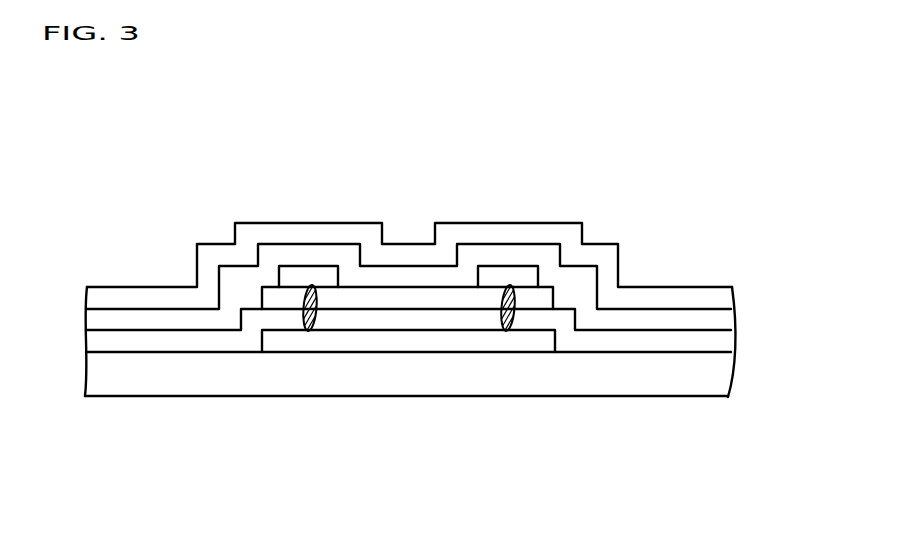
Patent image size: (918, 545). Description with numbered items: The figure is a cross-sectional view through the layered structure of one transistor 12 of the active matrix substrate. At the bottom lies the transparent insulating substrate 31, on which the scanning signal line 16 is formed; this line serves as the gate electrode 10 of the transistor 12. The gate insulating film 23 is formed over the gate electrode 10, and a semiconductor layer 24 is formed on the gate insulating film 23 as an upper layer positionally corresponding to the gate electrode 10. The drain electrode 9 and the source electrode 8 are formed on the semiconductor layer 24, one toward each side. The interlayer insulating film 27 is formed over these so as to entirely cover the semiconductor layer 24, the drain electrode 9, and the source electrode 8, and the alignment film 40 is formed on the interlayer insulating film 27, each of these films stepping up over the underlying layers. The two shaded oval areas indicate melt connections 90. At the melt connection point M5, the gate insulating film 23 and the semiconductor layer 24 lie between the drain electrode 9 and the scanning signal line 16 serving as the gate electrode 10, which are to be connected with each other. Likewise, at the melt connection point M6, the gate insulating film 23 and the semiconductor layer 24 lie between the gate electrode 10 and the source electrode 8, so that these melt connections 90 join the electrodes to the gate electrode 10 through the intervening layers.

The transistor 12 is at (408, 226).
The substrate 31 is at (712, 380).
The gate electrode 10 is at (363, 343).
The scanning signal line 16 is at (408, 385).
The gate insulating film 23 is at (712, 346).
The semiconductor layer 24 is at (437, 300).
The drain electrode 9 is at (309, 273).
The source electrode 8 is at (509, 273).
The interlayer insulating film 27 is at (712, 325).
The alignment film 40 is at (712, 303).
The melt connections 90 is at (307, 345).
The melt connection point M5 is at (306, 331).
The melt connection point M6 is at (506, 331).